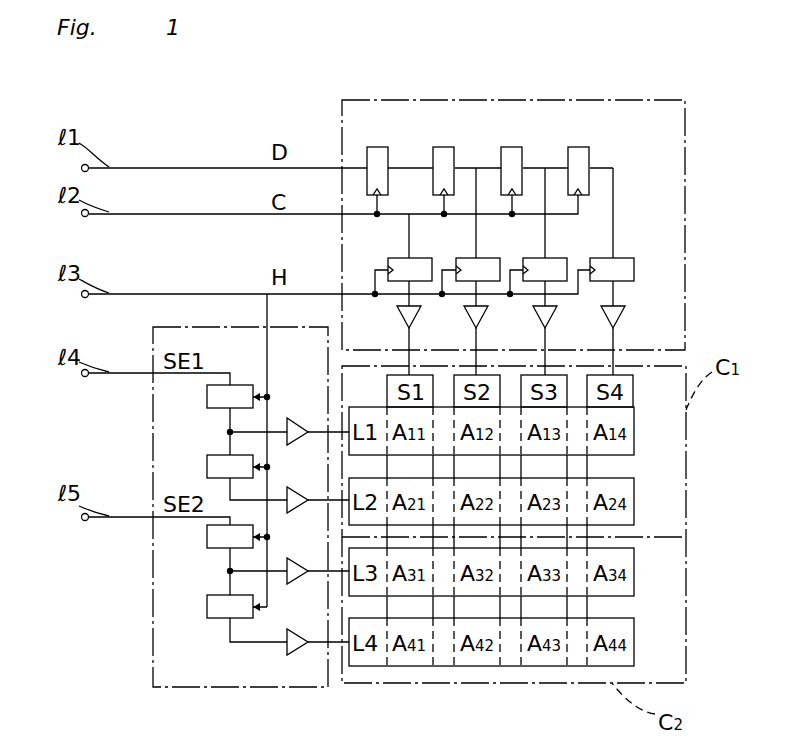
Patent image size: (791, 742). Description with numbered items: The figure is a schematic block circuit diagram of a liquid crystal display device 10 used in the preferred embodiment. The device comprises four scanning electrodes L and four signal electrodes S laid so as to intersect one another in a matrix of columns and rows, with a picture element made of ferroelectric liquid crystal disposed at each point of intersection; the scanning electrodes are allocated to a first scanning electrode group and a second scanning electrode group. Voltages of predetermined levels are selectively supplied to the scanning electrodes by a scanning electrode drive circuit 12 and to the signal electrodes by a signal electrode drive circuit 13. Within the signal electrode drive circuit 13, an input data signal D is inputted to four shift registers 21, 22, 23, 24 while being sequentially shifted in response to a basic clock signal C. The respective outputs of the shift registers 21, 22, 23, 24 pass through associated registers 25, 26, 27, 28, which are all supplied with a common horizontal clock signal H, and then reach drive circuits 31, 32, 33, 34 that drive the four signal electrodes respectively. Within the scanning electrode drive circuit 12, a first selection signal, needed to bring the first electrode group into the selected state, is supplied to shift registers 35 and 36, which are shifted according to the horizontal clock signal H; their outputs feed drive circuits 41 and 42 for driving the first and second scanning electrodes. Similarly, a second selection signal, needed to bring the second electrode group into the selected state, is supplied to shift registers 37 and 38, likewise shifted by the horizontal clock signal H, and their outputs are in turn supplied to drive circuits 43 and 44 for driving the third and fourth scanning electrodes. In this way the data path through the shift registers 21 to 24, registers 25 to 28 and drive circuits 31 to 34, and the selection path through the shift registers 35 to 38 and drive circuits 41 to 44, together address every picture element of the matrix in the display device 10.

The liquid crystal display device 10 is at (664, 86).
The scanning electrode drive circuit 12 is at (153, 644).
The signal electrode drive circuit 13 is at (431, 100).
The shift register 21 is at (376, 157).
The shift register 22 is at (447, 157).
The shift register 23 is at (515, 157).
The shift register 24 is at (582, 157).
The register 25 is at (416, 268).
The register 26 is at (486, 268).
The register 27 is at (553, 268).
The register 28 is at (626, 268).
The drive circuit 31 is at (412, 312).
The drive circuit 32 is at (479, 312).
The drive circuit 33 is at (548, 312).
The drive circuit 34 is at (616, 312).
The shift register 35 is at (213, 397).
The shift register 36 is at (214, 466).
The shift register 37 is at (213, 538).
The shift register 38 is at (213, 605).
The drive circuit 41 is at (297, 417).
The drive circuit 42 is at (297, 487).
The drive circuit 43 is at (297, 558).
The drive circuit 44 is at (297, 629).